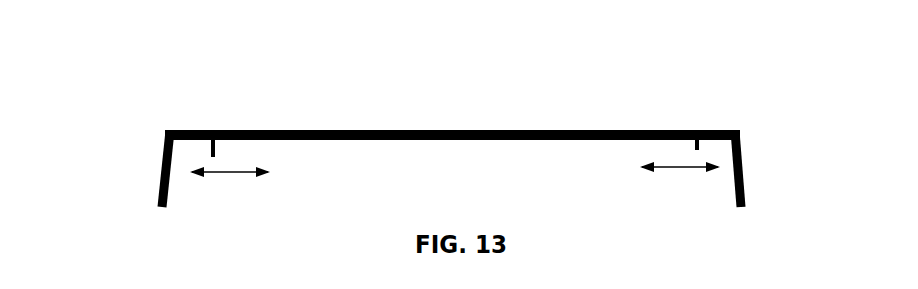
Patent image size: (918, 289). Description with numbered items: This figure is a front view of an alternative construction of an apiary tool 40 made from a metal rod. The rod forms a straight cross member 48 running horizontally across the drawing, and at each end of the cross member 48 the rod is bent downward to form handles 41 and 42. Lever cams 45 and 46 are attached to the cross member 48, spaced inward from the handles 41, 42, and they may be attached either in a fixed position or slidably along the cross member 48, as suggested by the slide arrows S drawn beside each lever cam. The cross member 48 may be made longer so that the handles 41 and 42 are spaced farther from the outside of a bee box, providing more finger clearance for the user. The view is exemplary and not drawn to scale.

The apiary tool 40 is at (501, 86).
The handle 41 is at (162, 181).
The handle 42 is at (744, 192).
The lever cam 45 is at (214, 128).
The lever cam 46 is at (697, 128).
The cross member 48 is at (400, 130).
The slide arrows S is at (238, 172).